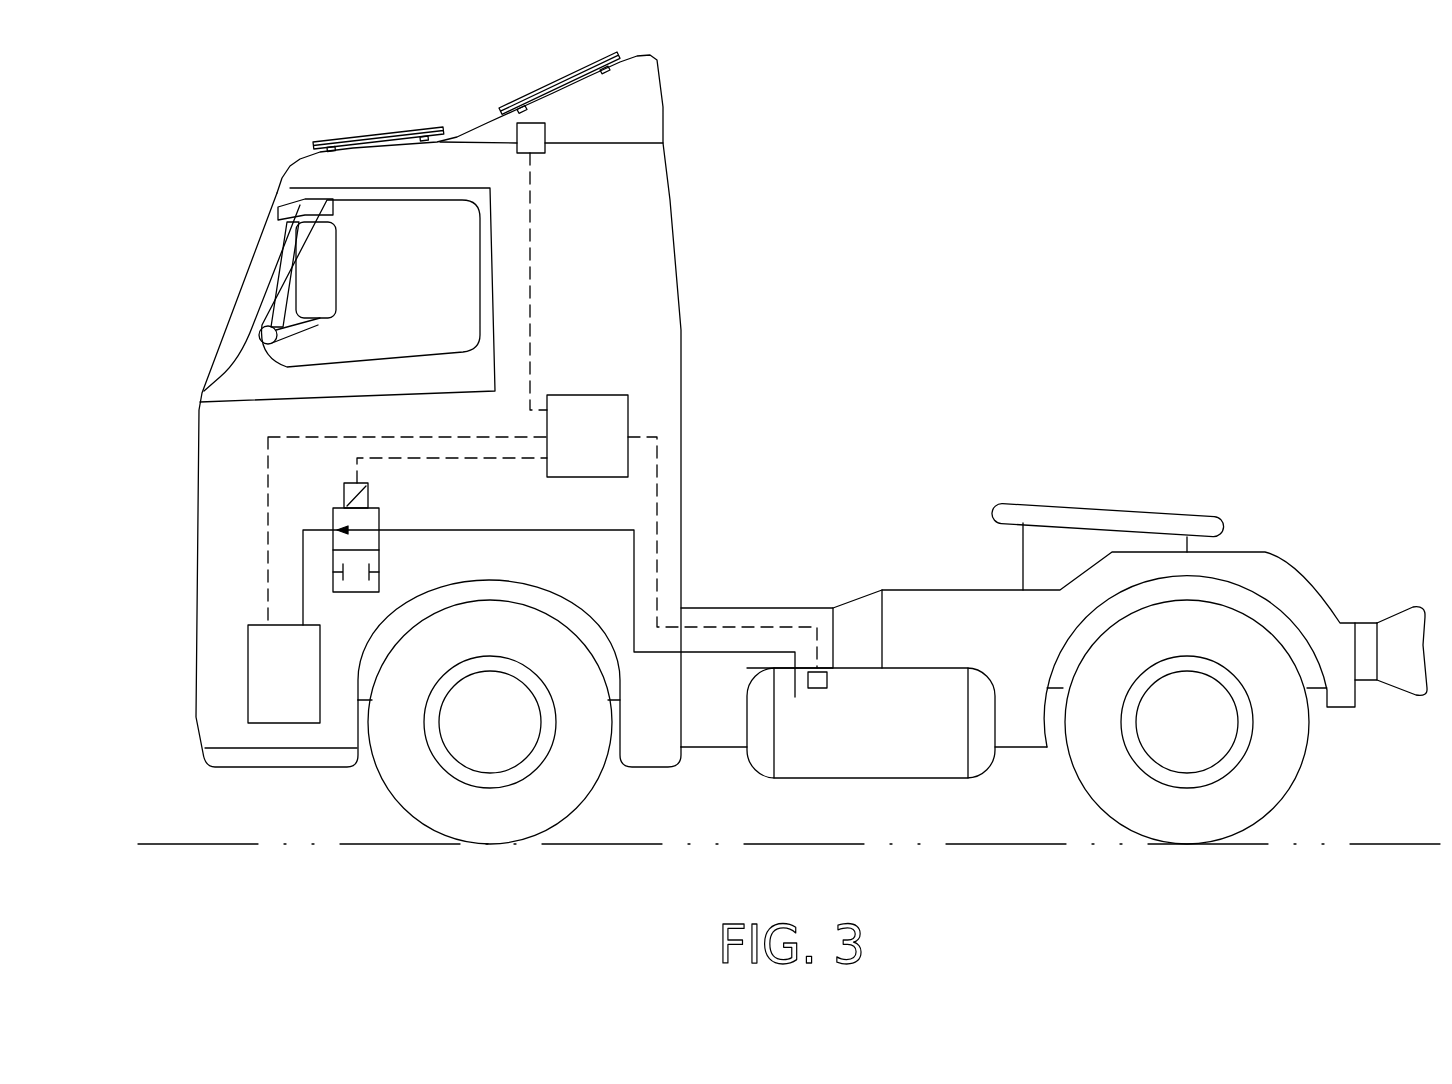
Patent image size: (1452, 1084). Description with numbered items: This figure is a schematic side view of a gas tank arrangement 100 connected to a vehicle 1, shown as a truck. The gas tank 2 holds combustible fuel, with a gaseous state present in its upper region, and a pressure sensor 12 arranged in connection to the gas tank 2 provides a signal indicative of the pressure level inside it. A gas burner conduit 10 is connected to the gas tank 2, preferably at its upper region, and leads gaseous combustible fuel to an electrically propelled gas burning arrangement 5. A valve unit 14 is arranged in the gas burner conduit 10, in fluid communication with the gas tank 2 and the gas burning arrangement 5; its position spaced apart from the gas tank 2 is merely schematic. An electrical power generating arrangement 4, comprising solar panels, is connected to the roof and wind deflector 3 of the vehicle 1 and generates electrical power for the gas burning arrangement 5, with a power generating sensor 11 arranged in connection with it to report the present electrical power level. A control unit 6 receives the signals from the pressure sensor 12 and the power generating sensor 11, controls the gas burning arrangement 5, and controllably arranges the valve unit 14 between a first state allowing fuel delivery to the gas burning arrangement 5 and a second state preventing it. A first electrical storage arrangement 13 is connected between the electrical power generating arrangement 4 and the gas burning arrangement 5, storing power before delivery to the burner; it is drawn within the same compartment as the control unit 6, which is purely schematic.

The vehicle 1 is at (777, 447).
The gas tank arrangement 100 is at (467, 420).
The gas tank 2 is at (897, 730).
The roof and wind deflector 3 is at (625, 93).
The electrical power generating arrangement 4 is at (373, 137).
The gas burning arrangement 5 is at (248, 673).
The control unit 6 is at (648, 399).
The gas burner conduit 10 is at (638, 578).
The power generating sensor 11 is at (547, 132).
The pressure sensor 12 is at (820, 690).
The first electrical storage arrangement 13 is at (590, 392).
The valve unit 14 is at (333, 517).